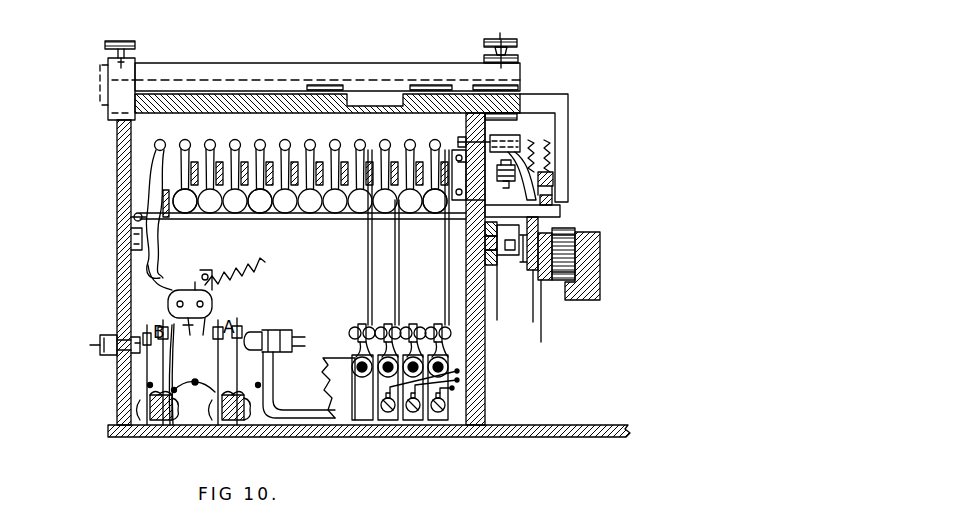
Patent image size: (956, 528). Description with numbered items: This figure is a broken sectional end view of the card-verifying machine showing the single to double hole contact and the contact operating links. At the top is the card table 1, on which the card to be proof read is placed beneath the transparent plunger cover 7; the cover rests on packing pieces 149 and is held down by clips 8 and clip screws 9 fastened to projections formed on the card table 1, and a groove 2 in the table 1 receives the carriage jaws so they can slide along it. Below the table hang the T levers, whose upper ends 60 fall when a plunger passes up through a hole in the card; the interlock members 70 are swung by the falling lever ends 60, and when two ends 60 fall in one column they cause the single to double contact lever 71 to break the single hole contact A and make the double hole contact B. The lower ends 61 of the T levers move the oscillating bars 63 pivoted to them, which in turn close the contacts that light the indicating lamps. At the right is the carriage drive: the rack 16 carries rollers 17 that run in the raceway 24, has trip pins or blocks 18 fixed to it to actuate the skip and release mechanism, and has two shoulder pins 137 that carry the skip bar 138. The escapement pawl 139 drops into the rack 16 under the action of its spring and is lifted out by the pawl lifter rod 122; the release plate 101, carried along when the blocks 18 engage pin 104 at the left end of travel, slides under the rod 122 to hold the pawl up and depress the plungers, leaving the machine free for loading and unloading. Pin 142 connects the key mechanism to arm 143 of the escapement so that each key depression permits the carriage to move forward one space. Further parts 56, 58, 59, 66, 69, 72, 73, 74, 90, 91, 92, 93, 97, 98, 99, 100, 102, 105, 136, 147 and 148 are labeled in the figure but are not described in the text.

The card table 1 is at (193, 94).
The groove 2 is at (375, 100).
The transparent plunger cover 7 is at (245, 76).
The clips 8 is at (136, 63).
The clip screws 9 is at (130, 43).
The rack 16 is at (535, 322).
The rollers 17 is at (580, 230).
The trip pins or blocks 18 is at (510, 237).
The raceway 24 is at (601, 290).
The base plate 56 is at (560, 430).
The left post 58 is at (117, 160).
The right post 59 is at (478, 410).
The T lever end 60 is at (383, 145).
The lever arm 61 is at (447, 306).
The oscillating bar 63 is at (445, 328).
The pin 66 is at (463, 184).
The lever 69 is at (255, 140).
The interlock members 70 is at (309, 201).
The single to double contact lever 71 is at (160, 255).
The spring 72 is at (232, 256).
The armature 73 is at (195, 282).
The pivot 74 is at (188, 318).
The linkage 90 is at (150, 437).
The bolt 91 is at (102, 345).
The nut 92 is at (110, 334).
The washer 93 is at (136, 353).
The wires 97 is at (458, 363).
The bracket 98 is at (364, 387).
The housing 99 is at (413, 420).
The screw 100 is at (395, 425).
The release plate 101 is at (497, 300).
The block 102 is at (484, 236).
The pin 104 is at (484, 260).
The frame 105 is at (562, 112).
The pawl lifter rod 122 is at (562, 212).
The block 136 is at (484, 243).
The shoulder pins 137 is at (532, 268).
The skip bar 138 is at (541, 342).
The escapement pawl 139 is at (554, 181).
The pin 142 is at (466, 150).
The escapement arm 143 is at (522, 140).
The pin 147 is at (134, 218).
The bracket 148 is at (131, 232).
The packing pieces 149 is at (107, 90).